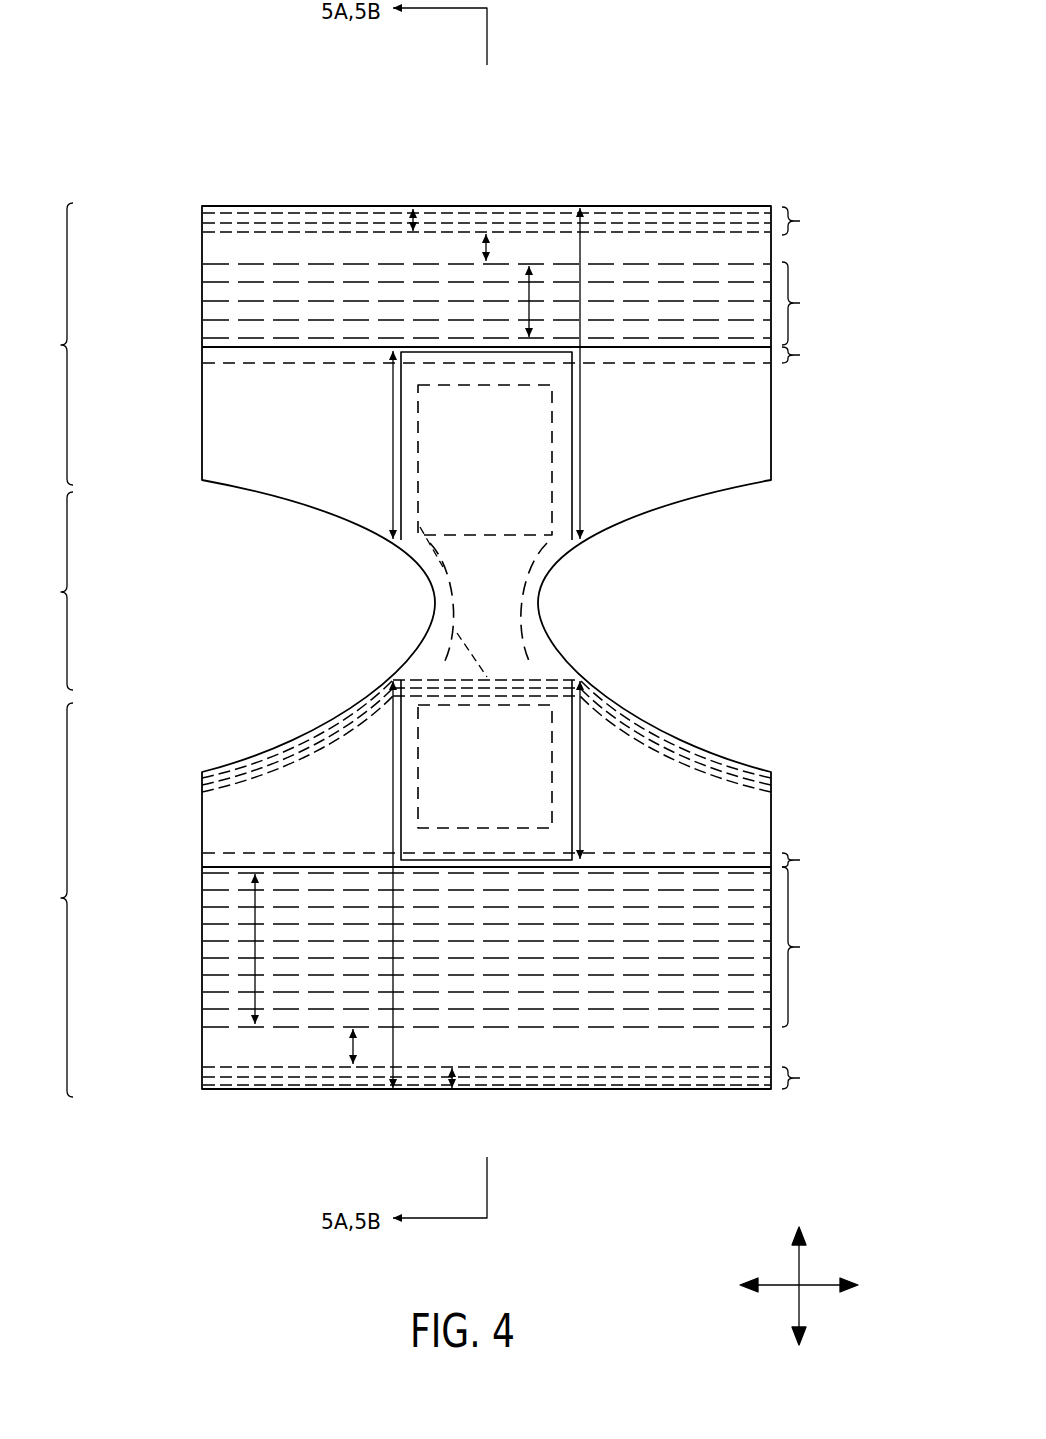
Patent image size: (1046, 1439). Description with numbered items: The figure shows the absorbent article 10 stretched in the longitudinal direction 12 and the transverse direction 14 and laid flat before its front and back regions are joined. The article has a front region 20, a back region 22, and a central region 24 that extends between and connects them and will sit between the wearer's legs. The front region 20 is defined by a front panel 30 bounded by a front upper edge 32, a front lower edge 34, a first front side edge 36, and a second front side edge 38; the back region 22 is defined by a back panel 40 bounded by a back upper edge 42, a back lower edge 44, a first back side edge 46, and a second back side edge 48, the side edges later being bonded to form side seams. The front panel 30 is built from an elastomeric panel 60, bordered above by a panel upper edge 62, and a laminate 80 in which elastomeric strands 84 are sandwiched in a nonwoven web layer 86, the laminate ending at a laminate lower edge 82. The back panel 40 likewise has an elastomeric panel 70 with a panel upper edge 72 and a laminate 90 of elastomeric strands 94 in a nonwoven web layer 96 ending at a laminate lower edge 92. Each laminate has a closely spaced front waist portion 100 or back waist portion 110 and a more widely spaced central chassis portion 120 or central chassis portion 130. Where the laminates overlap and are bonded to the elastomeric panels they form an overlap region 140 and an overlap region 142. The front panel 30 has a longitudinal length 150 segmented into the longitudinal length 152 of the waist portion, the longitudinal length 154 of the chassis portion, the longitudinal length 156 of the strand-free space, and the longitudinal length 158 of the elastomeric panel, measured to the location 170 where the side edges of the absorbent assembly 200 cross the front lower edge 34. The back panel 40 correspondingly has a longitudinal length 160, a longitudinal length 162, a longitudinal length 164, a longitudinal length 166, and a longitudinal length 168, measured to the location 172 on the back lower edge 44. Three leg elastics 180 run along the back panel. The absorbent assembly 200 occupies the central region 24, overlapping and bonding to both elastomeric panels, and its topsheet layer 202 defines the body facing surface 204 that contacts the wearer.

The absorbent article 10 is at (822, 76).
The longitudinal direction 12 is at (797, 1265).
The transverse direction 14 is at (835, 1283).
The front region 20 is at (51, 344).
The back region 22 is at (51, 900).
The central region 24 is at (51, 591).
The front panel 30 is at (807, 331).
The front upper edge 32 is at (474, 205).
The front lower edge 34 is at (430, 573).
The first front side edge 36 is at (776, 250).
The second front side edge 38 is at (202, 405).
The back panel 40 is at (806, 905).
The back upper edge 42 is at (620, 1090).
The back lower edge 44 is at (450, 634).
The first back side edge 46 is at (776, 1020).
The second back side edge 48 is at (202, 968).
The elastomeric panel 60 is at (752, 440).
The panel upper edge 62 is at (262, 355).
The elastomeric panel 70 is at (747, 832).
The panel upper edge 72 is at (658, 862).
The laminate 80 is at (213, 277).
The laminate lower edge 82 is at (338, 370).
The elastomeric strands 84 is at (378, 218).
The nonwoven web layer 86 is at (270, 245).
The laminate 90 is at (208, 1048).
The laminate lower edge 92 is at (300, 845).
The elastomeric strands 94 is at (550, 1012).
The nonwoven web layer 96 is at (280, 1048).
The front waist portion 100 is at (810, 221).
The back waist portion 110 is at (810, 1078).
The central chassis portion 120 is at (521, 303).
The central chassis portion 130 is at (521, 947).
The overlap region 140 is at (810, 356).
The overlap region 142 is at (521, 860).
The longitudinal length 150 is at (582, 445).
The longitudinal length 152 is at (412, 205).
The longitudinal length 154 is at (580, 207).
The longitudinal length 156 is at (512, 215).
The longitudinal length 158 is at (391, 544).
The longitudinal length 160 is at (355, 770).
The longitudinal length 162 is at (448, 1074).
The longitudinal length 164 is at (252, 912).
The longitudinal length 166 is at (352, 1045).
The longitudinal length 168 is at (580, 780).
The location 170 is at (580, 541).
The location 172 is at (391, 678).
The leg elastics 180 is at (215, 773).
The absorbent assembly 200 is at (588, 585).
The topsheet layer 202 is at (540, 640).
The body facing surface 204 is at (468, 589).